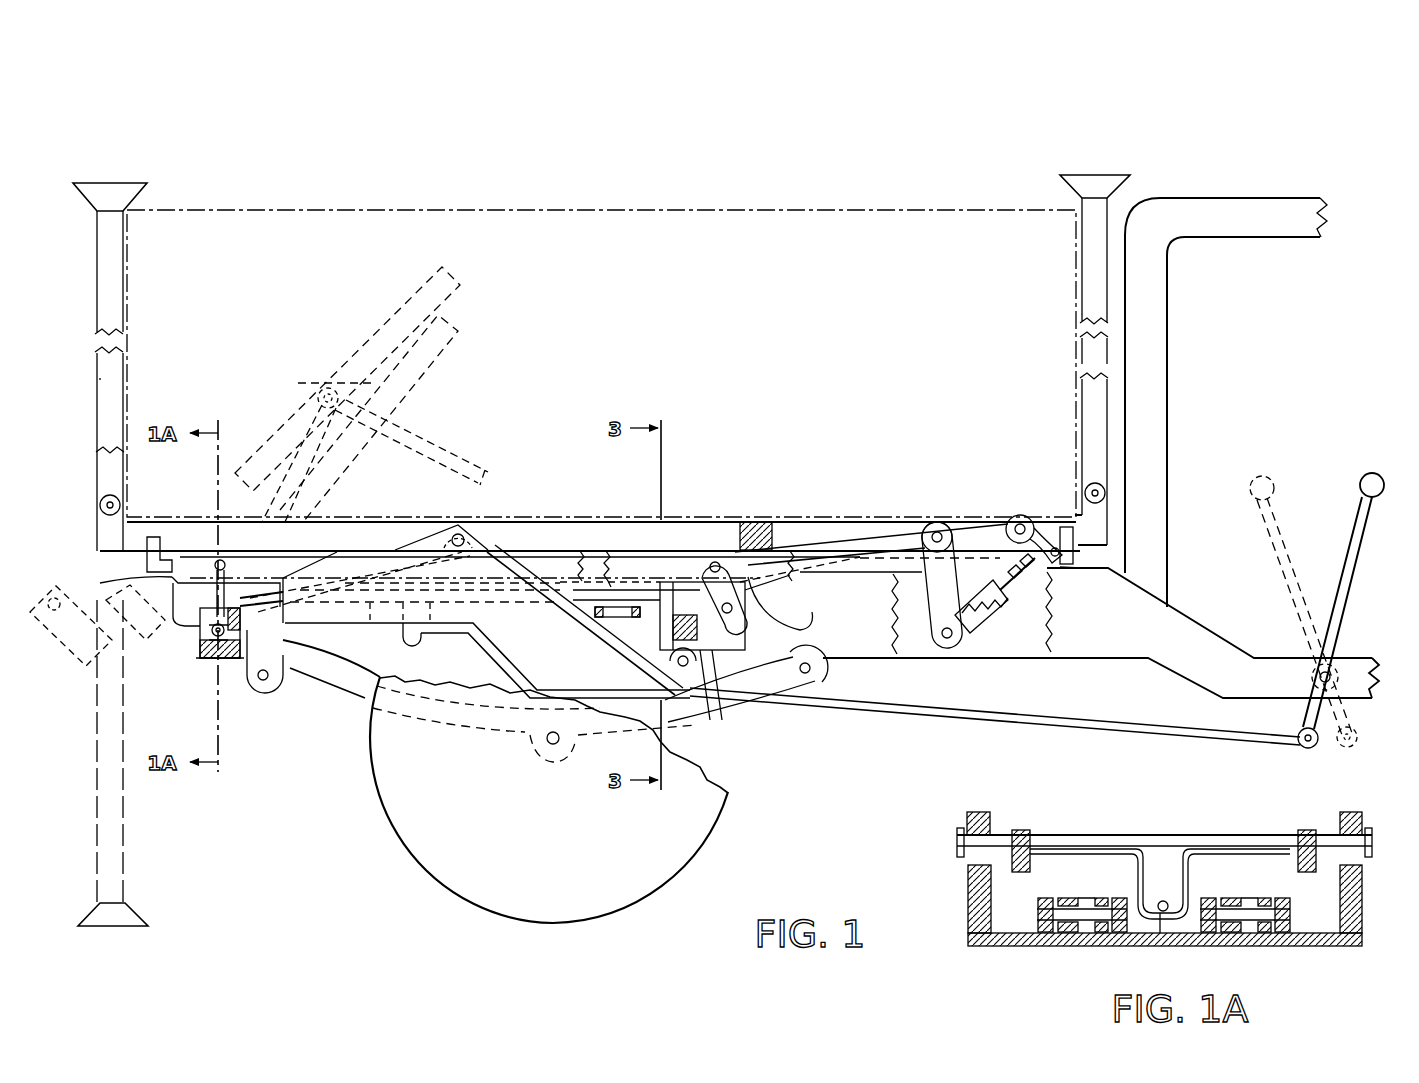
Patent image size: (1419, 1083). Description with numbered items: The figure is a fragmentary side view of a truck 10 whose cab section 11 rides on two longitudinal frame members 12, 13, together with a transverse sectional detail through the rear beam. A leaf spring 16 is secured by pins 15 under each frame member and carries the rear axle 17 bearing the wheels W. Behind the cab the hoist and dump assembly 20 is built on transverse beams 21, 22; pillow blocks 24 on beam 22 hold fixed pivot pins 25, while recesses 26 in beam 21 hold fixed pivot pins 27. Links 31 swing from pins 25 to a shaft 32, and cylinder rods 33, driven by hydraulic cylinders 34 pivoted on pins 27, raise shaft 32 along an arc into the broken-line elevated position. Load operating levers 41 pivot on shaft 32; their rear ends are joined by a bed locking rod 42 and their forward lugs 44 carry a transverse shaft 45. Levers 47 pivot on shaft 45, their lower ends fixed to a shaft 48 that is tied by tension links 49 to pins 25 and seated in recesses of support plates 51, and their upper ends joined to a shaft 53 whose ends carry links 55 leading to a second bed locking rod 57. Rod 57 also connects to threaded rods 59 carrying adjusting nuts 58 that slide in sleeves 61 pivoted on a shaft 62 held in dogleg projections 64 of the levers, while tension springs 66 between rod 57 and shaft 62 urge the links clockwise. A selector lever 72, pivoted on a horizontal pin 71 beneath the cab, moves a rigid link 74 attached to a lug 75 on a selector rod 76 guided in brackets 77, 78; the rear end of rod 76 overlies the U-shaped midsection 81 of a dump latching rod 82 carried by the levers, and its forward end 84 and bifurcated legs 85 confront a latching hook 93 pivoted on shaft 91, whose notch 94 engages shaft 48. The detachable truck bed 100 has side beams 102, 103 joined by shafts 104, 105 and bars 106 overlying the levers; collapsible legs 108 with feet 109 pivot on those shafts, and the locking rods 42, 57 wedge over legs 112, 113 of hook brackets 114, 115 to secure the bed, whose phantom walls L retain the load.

In FIG. 1, the walls L is at (686, 207).
In FIG. 1, the truck tires or wheels W is at (390, 845).
In FIG. 1, the truck 10 is at (1203, 186).
In FIG. 1, the cab section 11 is at (1268, 203).
In FIG. 1, the frame member 12 is at (546, 548).
In FIG. 1A, the frame member 12 is at (968, 898).
In FIG. 1, the frame member 13 is at (998, 658).
In FIG. 1A, the frame member 13 is at (1362, 898).
In FIG. 1, the pins 15 is at (264, 684).
In FIG. 1, the suspension member or leaf spring 16 is at (340, 690).
In FIG. 1, the rear drive axle 17 is at (545, 741).
In FIG. 1, the hoist and dump assembly 20 is at (850, 542).
In FIG. 1, the beam 21 is at (718, 697).
In FIG. 1, the beam 22 is at (218, 660).
In FIG. 1A, the beam 22 is at (1150, 947).
In FIG. 1, the pillow blocks 24 is at (228, 660).
In FIG. 1A, the pillow blocks 24 is at (1045, 933).
In FIG. 1, the pivot pins 25 is at (212, 650).
In FIG. 1A, the pivot pins 25 is at (1037, 914).
In FIG. 1, the recesses 26 is at (655, 708).
In FIG. 1, the pivot pins 27 is at (669, 665).
In FIG. 1, the links 31 is at (313, 466).
In FIG. 1A, the links 31 is at (1062, 898).
In FIG. 1, the rod or shaft 32 is at (320, 392).
In FIG. 1, the cylinder rods 33 is at (488, 548).
In FIG. 1, the hydraulic cylinders 34 is at (583, 622).
In FIG. 1, the load operating levers 41 is at (420, 375).
In FIG. 1A, the load operating levers 41 is at (1025, 830).
In FIG. 1, the bed locking rod 42 is at (165, 548).
In FIG. 1A, the bed locking rod 42 is at (1200, 835).
In FIG. 1, the lugs 44 is at (957, 525).
In FIG. 1, the shaft 45 is at (930, 527).
In FIG. 1, the levers 47 is at (897, 534).
In FIG. 1, the rod or shaft 48 is at (740, 612).
In FIG. 1, the tension links 49 is at (590, 640).
In FIG. 1A, the tension links 49 is at (1101, 898).
In FIG. 1, the support plates 51 is at (765, 686).
In FIG. 1, the shaft 53 is at (1017, 520).
In FIG. 1, the links 55 is at (1034, 517).
In FIG. 1, the bed locking rod 57 is at (1056, 545).
In FIG. 1, the nuts or collars 58 is at (1008, 570).
In FIG. 1, the threaded rods 59 is at (1052, 585).
In FIG. 1, the sleeves 61 is at (960, 646).
In FIG. 1, the shaft 62 is at (945, 642).
In FIG. 1, the dogleg-shaped projections 64 is at (925, 593).
In FIG. 1, the tension springs 66 is at (1014, 602).
In FIG. 1, the pivot 71 is at (1318, 677).
In FIG. 1, the selector lever 72 is at (1358, 512).
In FIG. 1, the rigid link 74 is at (1122, 725).
In FIG. 1, the lug 75 is at (410, 645).
In FIG. 1, the selector rod 76 is at (198, 630).
In FIG. 1A, the selector rod 76 is at (1164, 901).
In FIG. 1, the guide bracket 77 is at (235, 612).
In FIG. 1, the guide bracket 78 is at (660, 585).
In FIG. 1, the U-shaped midsection 81 is at (200, 637).
In FIG. 1A, the U-shaped midsection 81 is at (1170, 920).
In FIG. 1, the dump latching rod 82 is at (218, 560).
In FIG. 1A, the dump latching rod 82 is at (1110, 850).
In FIG. 1, the forward end 84 is at (665, 612).
In FIG. 1, the legs 85 is at (672, 582).
In FIG. 1, the rod or shaft 91 is at (718, 560).
In FIG. 1, the latching hook 93 is at (780, 595).
In FIG. 1, the notch or slot 94 is at (742, 630).
In FIG. 1, the truck bed 100 is at (94, 376).
In FIG. 1, the side beam 102 is at (103, 543).
In FIG. 1A, the side beam 102 is at (985, 813).
In FIG. 1, the side beam 103 is at (620, 548).
In FIG. 1A, the side beam 103 is at (1345, 813).
In FIG. 1, the shaft 104 is at (100, 505).
In FIG. 1, the shaft 105 is at (1105, 490).
In FIG. 1, the bars 106 is at (758, 522).
In FIG. 1, the collapsible legs 108 is at (103, 266).
In FIG. 1, the feet 109 is at (150, 183).
In FIG. 1, the leg 112 is at (150, 582).
In FIG. 1, the leg 113 is at (1068, 568).
In FIG. 1, the hook bracket 114 is at (147, 565).
In FIG. 1A, the hook bracket 114 is at (957, 830).
In FIG. 1, the hook bracket 115 is at (1073, 554).